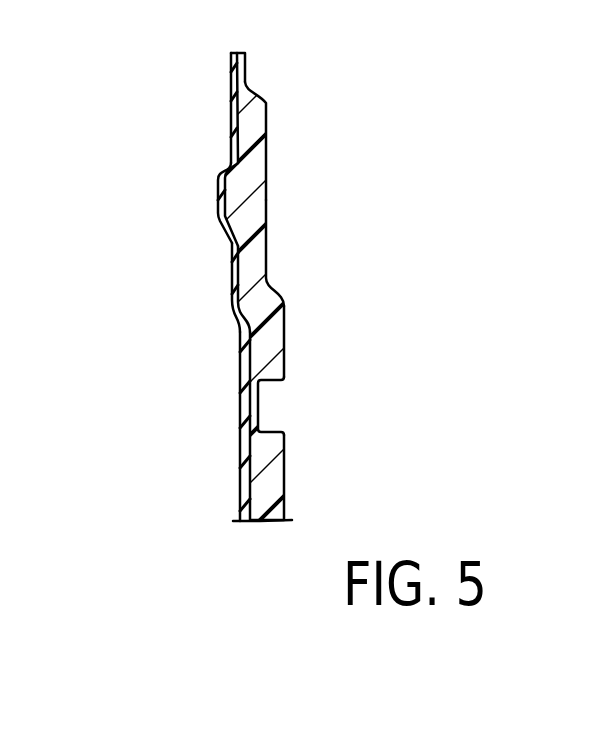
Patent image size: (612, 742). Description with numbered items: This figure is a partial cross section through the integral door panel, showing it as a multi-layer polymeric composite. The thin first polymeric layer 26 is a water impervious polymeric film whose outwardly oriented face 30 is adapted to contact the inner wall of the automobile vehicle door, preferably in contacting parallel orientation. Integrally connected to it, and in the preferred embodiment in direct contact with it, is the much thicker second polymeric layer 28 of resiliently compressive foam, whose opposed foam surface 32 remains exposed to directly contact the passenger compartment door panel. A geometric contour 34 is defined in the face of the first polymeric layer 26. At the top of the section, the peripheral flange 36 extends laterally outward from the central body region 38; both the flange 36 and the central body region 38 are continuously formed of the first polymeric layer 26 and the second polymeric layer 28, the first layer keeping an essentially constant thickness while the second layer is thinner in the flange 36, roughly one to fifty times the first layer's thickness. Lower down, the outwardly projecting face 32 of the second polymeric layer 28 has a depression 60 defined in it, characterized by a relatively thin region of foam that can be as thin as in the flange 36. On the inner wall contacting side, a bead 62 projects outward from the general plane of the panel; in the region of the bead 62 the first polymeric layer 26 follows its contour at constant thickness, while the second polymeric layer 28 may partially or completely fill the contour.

The first polymeric layer 26 is at (224, 277).
The second polymeric layer 28 is at (270, 99).
The outwardly oriented face 30 is at (240, 395).
The foam surface 32 is at (284, 306).
The geometric contour 34 is at (231, 118).
The flange 36 is at (247, 59).
The central body region 38 is at (268, 239).
The depression 60 is at (258, 410).
The bead 62 is at (217, 190).